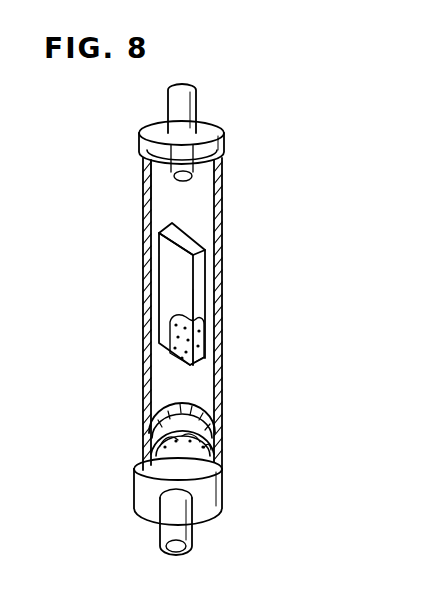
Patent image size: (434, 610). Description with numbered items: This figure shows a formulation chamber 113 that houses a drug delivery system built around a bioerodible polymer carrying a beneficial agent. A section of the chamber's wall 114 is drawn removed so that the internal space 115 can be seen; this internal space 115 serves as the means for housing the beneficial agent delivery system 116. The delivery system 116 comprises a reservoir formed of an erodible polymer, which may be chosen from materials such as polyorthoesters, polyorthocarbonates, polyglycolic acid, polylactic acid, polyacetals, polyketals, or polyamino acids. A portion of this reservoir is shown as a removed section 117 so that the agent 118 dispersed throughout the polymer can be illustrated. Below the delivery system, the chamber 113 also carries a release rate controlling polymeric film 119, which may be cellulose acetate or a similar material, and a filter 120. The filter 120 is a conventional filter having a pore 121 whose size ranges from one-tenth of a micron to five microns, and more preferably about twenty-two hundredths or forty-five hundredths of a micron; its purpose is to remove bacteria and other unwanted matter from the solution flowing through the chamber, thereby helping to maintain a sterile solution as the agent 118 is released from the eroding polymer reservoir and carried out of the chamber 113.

The formulation chamber 113 is at (232, 192).
The wall 114 is at (224, 236).
The internal space 115 is at (165, 196).
The beneficial agent delivery system 116 is at (176, 268).
The removed section 117 is at (206, 346).
The agent 118 is at (200, 340).
The release rate controlling polymeric film 119 is at (212, 415).
The filter 120 is at (210, 457).
The pore 121 is at (145, 460).